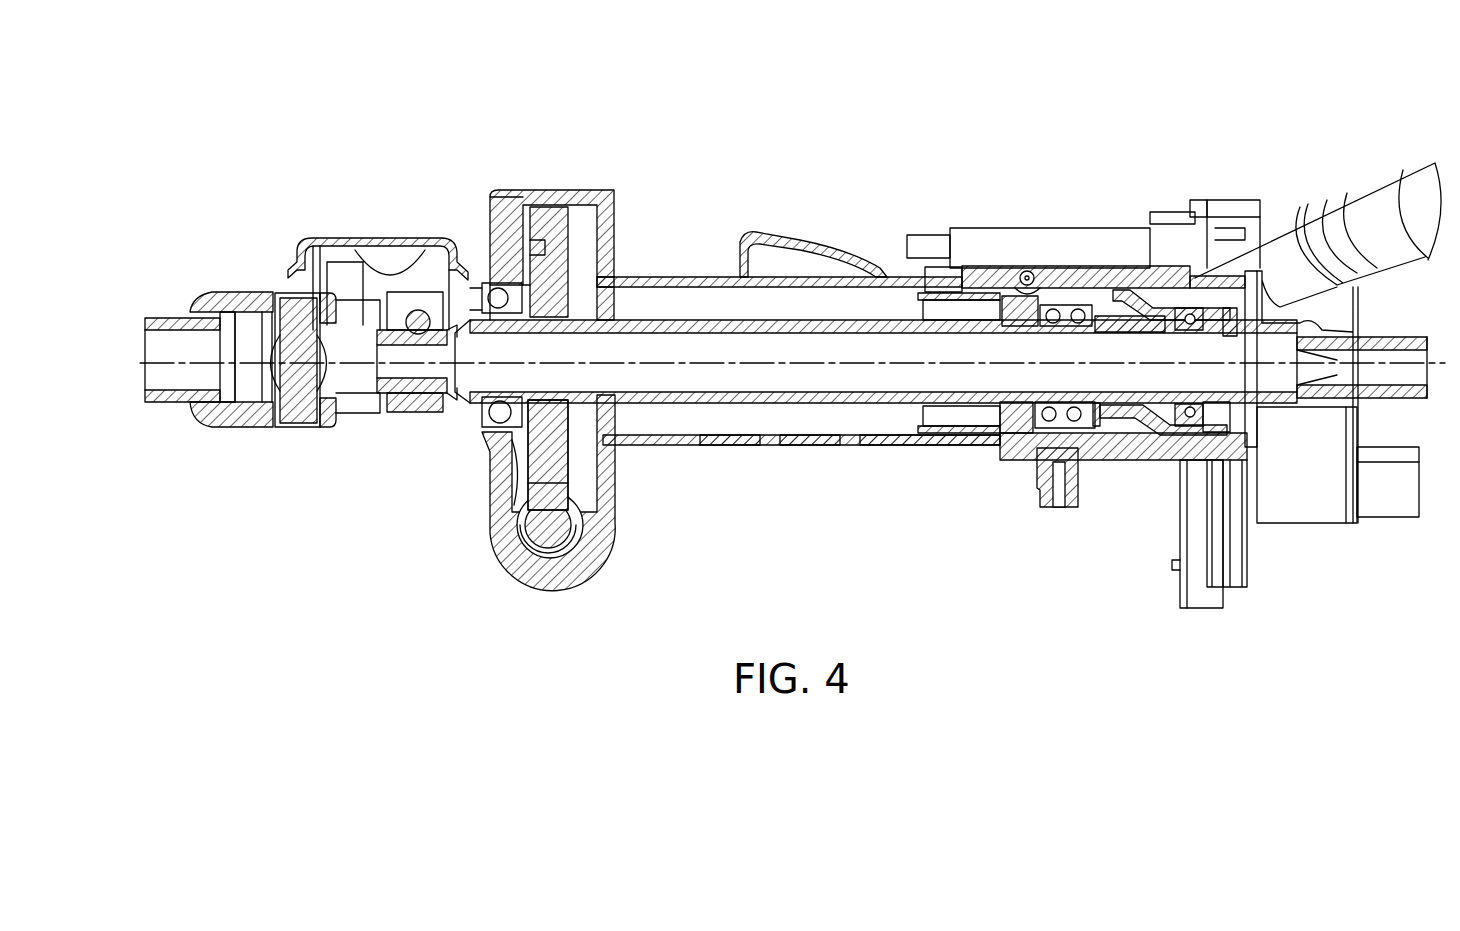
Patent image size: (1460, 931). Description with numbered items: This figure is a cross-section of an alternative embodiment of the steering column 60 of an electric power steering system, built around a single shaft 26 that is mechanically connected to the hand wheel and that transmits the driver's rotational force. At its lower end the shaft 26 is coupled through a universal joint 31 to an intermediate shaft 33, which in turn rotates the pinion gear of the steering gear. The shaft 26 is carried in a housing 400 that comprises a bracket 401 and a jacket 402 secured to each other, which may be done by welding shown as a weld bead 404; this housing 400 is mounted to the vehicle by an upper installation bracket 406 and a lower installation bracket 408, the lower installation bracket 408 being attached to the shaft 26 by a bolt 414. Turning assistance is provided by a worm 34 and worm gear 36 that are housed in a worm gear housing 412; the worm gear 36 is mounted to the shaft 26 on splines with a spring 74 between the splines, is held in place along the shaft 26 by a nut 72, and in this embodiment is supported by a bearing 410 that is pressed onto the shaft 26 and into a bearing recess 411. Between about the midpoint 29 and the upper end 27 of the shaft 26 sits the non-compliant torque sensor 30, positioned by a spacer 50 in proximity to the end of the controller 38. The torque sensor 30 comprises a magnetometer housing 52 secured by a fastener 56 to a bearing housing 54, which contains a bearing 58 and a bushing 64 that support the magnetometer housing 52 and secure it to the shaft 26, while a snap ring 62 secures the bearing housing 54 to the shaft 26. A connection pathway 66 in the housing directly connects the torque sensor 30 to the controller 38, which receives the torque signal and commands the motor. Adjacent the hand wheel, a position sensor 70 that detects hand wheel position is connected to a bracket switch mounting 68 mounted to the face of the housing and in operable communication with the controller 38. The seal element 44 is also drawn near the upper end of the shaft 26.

The steering column 60 is at (1153, 90).
The intermediate shaft 33 is at (165, 316).
The universal joint 31 is at (292, 428).
The nut 72 is at (468, 428).
The bolt 414 is at (419, 312).
The lower installation bracket 408 is at (358, 237).
The bearing recess 411 is at (480, 286).
The bearing 410 is at (478, 422).
The worm gear 36 is at (550, 226).
The jacket 402 is at (604, 190).
The worm gear housing 412 is at (502, 190).
The weld bead 404 is at (618, 268).
The worm 34 is at (527, 548).
The spring 74 is at (514, 428).
The midpoint 29 is at (705, 335).
The shaft 26 is at (690, 403).
The housing 400 is at (757, 452).
The bracket 401 is at (826, 447).
The upper installation bracket 406 is at (810, 248).
The connection pathway 66 is at (928, 280).
The controller 38 is at (1000, 238).
The spacer 50 is at (1115, 300).
The bearing housing 54 is at (1045, 424).
The seal 44 is at (1195, 312).
The non-compliant torque sensor 30 is at (966, 422).
The magnetometer housing 52 is at (918, 434).
The fastener 56 is at (1012, 434).
The bearing 58 is at (1060, 492).
The snap ring 62 is at (1095, 432).
The bushing 64 is at (1110, 430).
The bracket switch mounting 68 is at (1150, 460).
The upper end 27 is at (1270, 388).
The position sensor 70 is at (1291, 502).